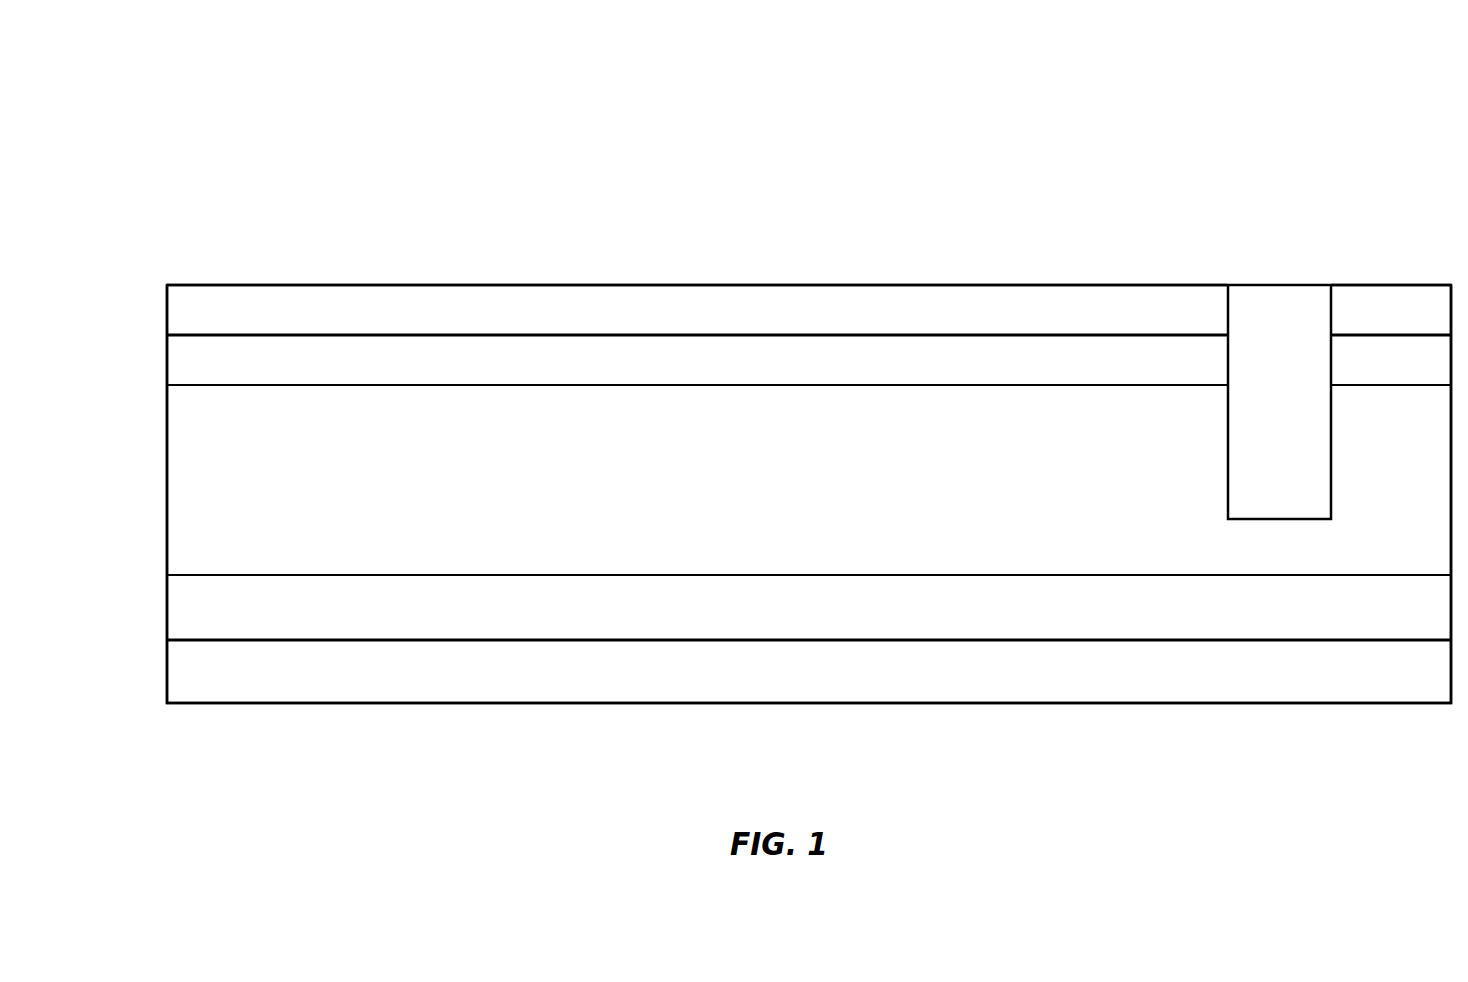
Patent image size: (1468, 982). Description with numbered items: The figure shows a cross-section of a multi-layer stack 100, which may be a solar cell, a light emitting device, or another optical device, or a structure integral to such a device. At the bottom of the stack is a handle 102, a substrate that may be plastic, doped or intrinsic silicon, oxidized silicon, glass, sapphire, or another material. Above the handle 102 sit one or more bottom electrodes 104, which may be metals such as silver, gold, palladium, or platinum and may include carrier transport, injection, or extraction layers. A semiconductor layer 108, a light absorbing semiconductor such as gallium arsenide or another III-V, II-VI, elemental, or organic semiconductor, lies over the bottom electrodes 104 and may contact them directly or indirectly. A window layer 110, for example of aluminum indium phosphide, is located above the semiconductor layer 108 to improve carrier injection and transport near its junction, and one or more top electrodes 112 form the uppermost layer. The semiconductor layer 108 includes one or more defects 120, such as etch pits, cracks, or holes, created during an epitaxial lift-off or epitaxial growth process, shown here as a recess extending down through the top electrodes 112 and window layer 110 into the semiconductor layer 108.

The multi-layer stack 100 is at (236, 118).
The handle 102 is at (167, 676).
The bottom electrodes 104 is at (167, 604).
The semiconductor layer 108 is at (167, 491).
The window layer 110 is at (167, 364).
The top electrodes 112 is at (167, 309).
The defects 120 is at (1280, 268).